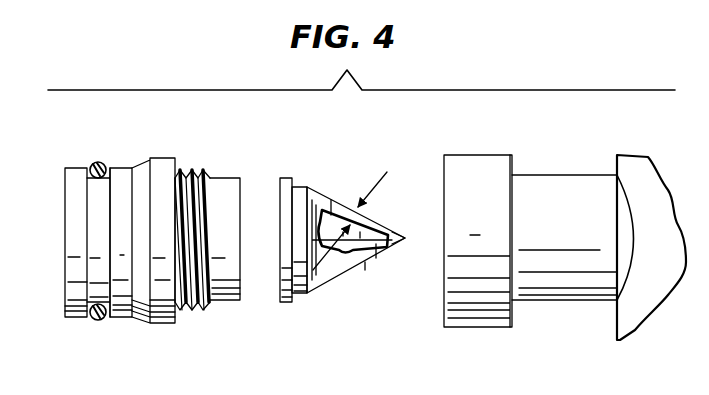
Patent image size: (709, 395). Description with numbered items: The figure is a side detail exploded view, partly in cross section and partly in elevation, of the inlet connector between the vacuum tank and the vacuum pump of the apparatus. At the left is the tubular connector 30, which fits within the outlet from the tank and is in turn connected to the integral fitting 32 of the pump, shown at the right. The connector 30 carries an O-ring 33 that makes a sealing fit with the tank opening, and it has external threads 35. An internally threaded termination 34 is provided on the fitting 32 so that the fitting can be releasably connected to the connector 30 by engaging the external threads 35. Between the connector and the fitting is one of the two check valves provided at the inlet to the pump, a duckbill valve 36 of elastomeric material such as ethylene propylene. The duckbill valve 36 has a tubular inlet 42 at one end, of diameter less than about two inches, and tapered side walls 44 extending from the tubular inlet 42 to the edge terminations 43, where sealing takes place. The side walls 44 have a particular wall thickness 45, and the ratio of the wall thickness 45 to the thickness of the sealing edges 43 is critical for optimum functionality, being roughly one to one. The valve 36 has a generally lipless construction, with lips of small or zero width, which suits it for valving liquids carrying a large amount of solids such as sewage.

The tubular connector 30 is at (155, 332).
The integral fitting 32 is at (557, 184).
The O-ring 33 is at (99, 321).
The internally threaded termination 34 is at (480, 163).
The external threads 35 is at (193, 170).
The duckbill valve 36 is at (338, 246).
The tubular inlet 42 is at (283, 213).
The edge terminations 43 is at (404, 240).
The tapered side walls 44 is at (337, 207).
The wall thickness 45 is at (363, 220).